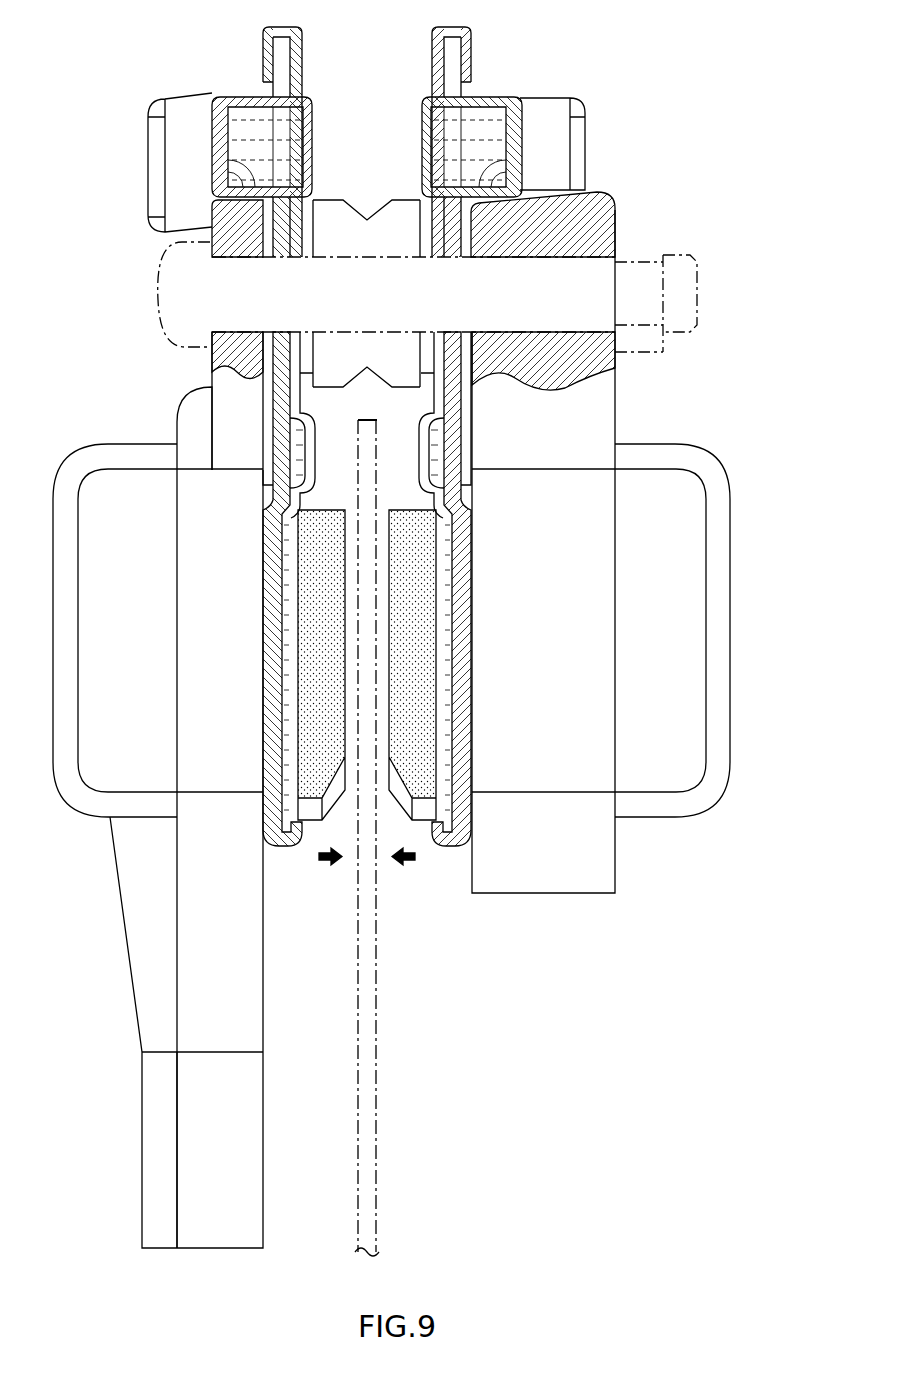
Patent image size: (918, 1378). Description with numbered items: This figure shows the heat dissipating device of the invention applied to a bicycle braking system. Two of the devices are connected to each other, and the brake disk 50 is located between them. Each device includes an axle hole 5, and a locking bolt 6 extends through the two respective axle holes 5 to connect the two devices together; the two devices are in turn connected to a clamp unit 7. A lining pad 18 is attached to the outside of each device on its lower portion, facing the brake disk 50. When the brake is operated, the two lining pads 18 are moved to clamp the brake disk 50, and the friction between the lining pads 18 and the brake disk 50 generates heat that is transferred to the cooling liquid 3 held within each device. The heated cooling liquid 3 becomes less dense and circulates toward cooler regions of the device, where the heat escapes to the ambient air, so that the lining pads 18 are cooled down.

The cooling liquid 3 is at (270, 128).
The axle hole 5 is at (297, 258).
The locking bolt 6 is at (683, 252).
The clamp unit 7 is at (662, 807).
The lining pad 18 is at (410, 770).
The brake disk 50 is at (377, 1022).